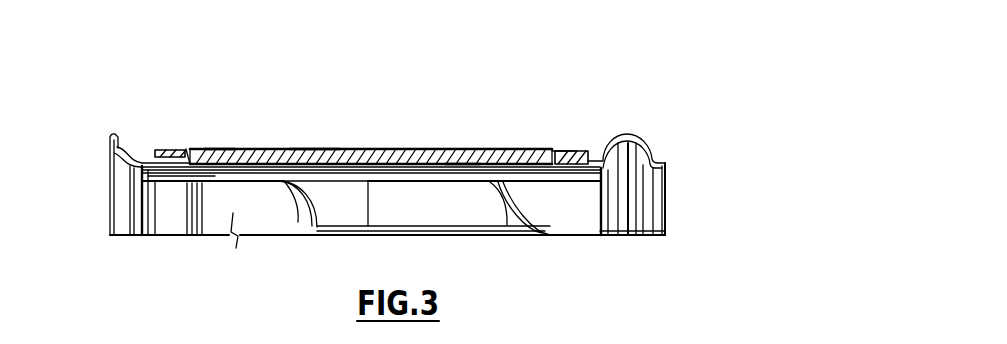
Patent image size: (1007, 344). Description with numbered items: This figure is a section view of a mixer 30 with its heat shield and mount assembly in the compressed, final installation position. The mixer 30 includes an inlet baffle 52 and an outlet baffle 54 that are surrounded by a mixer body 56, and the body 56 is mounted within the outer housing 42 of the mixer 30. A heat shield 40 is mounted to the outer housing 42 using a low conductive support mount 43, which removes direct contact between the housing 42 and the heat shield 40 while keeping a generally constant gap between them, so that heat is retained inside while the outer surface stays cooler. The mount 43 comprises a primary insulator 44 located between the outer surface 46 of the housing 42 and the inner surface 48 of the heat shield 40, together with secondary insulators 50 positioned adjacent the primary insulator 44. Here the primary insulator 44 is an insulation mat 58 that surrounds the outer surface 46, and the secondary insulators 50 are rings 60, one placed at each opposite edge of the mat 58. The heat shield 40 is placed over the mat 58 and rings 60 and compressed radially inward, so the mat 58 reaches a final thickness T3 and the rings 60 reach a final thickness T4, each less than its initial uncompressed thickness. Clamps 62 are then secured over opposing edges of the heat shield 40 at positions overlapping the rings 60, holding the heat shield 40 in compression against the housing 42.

The mixer 30 is at (715, 86).
The heat shield 40 is at (561, 137).
The outer housing 42 is at (643, 148).
The low conductive support mount 43 is at (178, 132).
The primary insulator 44 is at (218, 138).
The outer surface 46 is at (312, 148).
The inner surface 48 is at (425, 148).
The secondary insulator 50 is at (122, 177).
The inlet baffle 52 is at (300, 208).
The outlet baffle 54 is at (528, 212).
The mixer body 56 is at (343, 181).
The insulation mat 58 is at (462, 149).
The ring 60 is at (140, 152).
The clamp 62 is at (175, 149).
The final thickness T3 is at (512, 137).
The final thickness T4 is at (562, 191).